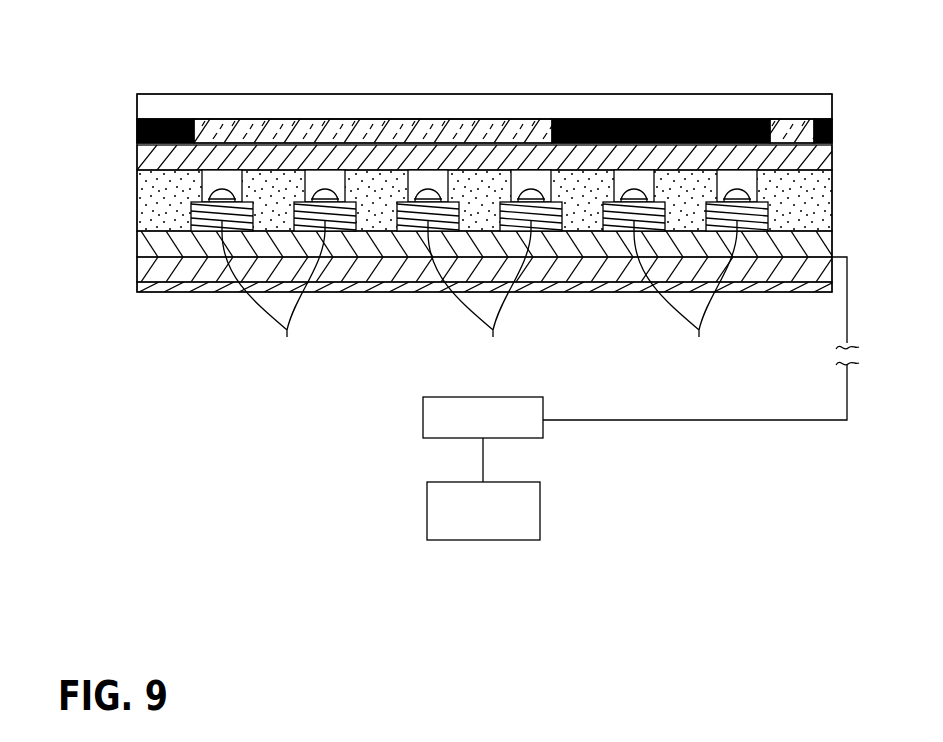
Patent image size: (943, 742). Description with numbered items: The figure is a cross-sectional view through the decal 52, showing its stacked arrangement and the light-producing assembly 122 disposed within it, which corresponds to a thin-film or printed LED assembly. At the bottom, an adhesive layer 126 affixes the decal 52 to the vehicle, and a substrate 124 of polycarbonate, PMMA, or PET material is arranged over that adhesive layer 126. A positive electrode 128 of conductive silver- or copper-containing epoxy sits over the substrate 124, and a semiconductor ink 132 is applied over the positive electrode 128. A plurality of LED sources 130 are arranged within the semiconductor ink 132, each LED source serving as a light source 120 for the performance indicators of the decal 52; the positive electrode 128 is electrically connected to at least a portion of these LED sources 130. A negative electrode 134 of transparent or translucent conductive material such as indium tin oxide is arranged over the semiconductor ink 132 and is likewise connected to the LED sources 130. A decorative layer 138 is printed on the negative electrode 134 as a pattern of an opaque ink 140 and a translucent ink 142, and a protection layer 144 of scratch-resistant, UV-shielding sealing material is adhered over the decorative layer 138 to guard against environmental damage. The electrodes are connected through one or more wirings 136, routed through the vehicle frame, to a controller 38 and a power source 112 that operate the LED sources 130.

The decal 52 is at (134, 90).
The protection layer 144 is at (136, 102).
The decorative layer 138 is at (438, 88).
The opaque ink 140 is at (175, 118).
The translucent ink 142 is at (350, 125).
The negative electrode 134 is at (148, 148).
The semiconductor ink 132 is at (155, 192).
The positive electrode 128 is at (143, 240).
The substrate 124 is at (148, 263).
The adhesive layer 126 is at (456, 300).
The light-producing assembly 122 is at (424, 231).
The light source 120 is at (204, 236).
The LED sources 130 is at (479, 289).
The controller 38 is at (423, 419).
The power source 112 is at (427, 512).
The wirings 136 is at (625, 422).